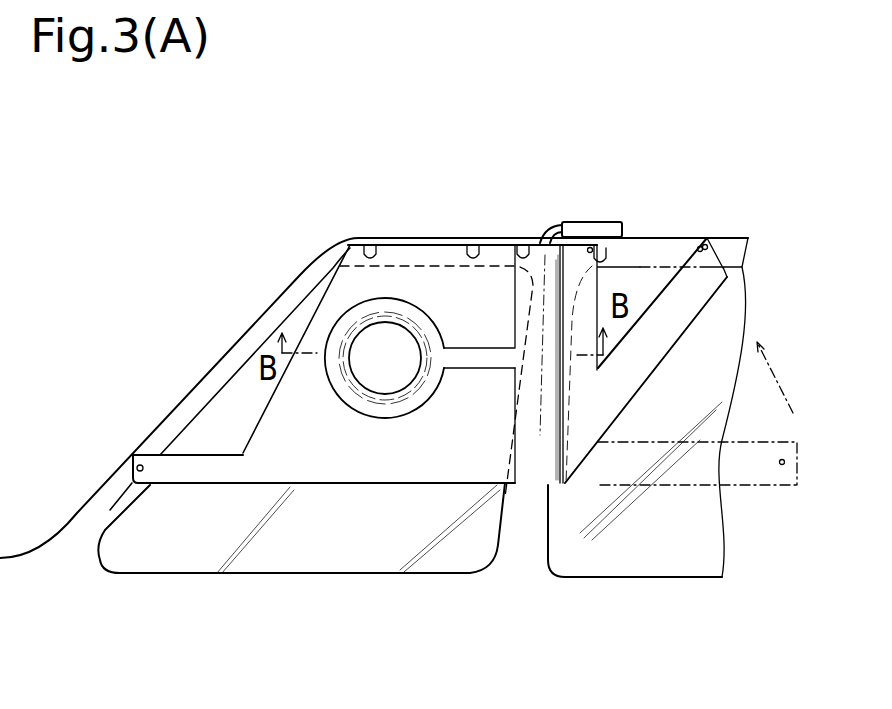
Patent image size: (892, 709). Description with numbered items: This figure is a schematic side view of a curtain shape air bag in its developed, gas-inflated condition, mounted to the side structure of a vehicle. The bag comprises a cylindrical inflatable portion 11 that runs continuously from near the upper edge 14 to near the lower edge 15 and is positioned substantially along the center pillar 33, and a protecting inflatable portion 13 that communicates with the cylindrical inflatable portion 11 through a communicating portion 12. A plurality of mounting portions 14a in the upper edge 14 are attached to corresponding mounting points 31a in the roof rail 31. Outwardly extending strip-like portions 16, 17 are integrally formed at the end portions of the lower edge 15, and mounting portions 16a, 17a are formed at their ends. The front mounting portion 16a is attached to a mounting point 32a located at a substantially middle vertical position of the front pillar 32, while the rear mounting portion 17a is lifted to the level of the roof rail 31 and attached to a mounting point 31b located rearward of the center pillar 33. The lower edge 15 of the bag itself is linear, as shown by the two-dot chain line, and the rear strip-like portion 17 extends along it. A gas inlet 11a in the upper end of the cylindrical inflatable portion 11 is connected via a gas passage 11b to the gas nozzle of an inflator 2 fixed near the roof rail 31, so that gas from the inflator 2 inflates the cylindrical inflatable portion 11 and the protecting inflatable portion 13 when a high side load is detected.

The inflator 2 is at (608, 222).
The cylindrical inflatable portion 11 is at (540, 460).
The gas inlet 11a is at (523, 246).
The gas passage 11b is at (551, 227).
The communicating portion 12 is at (470, 372).
The protecting inflatable portion 13 is at (378, 405).
The upper edge 14 is at (400, 243).
The mounting portions 14a is at (370, 256).
The lower edge 15 is at (285, 530).
The strip-like portion 16 is at (187, 470).
The mounting portion 16a is at (140, 472).
The strip-like portion 17 is at (675, 318).
The mounting portion 17a is at (710, 248).
The roof rail 31 is at (728, 262).
The mounting points 31a is at (349, 243).
The mounting point 31b is at (707, 237).
The front pillar 32 is at (196, 372).
The mounting point 32a is at (124, 446).
The center pillar 33 is at (548, 520).